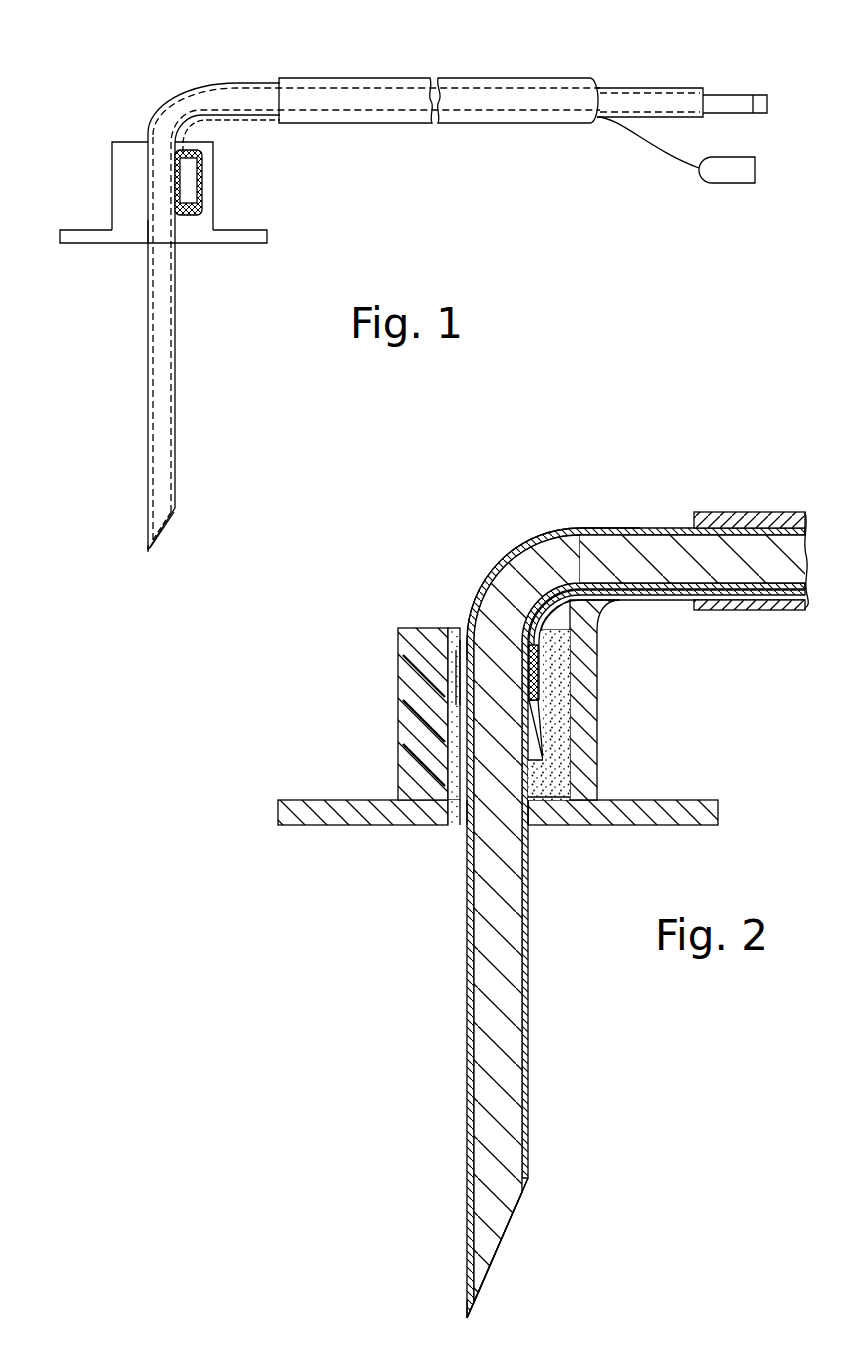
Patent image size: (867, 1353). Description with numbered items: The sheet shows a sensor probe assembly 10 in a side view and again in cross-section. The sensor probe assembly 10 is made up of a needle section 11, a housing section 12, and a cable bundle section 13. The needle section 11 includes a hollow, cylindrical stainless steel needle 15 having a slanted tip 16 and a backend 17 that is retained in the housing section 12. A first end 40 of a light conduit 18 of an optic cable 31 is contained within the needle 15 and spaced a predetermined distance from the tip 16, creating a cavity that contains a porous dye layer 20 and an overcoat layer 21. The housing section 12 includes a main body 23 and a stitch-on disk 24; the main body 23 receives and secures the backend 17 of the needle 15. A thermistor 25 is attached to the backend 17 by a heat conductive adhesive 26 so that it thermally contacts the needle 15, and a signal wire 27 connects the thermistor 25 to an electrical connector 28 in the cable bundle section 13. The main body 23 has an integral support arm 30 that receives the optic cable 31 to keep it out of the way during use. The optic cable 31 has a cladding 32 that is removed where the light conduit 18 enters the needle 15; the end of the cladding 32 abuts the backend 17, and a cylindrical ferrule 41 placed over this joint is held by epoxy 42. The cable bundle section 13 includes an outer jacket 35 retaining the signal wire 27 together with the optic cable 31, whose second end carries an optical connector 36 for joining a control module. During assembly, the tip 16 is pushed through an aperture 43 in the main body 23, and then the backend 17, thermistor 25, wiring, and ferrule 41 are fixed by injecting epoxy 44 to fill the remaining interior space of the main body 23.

In FIG. 1, the sensor probe assembly 10 is at (100, 99).
In FIG. 1, the needle section 11 is at (98, 368).
In FIG. 1, the housing section 12 is at (78, 185).
In FIG. 1, the cable bundle section 13 is at (613, 52).
In FIG. 1, the needle 15 is at (175, 300).
In FIG. 2, the needle 15 is at (527, 990).
In FIG. 1, the tip 16 is at (148, 550).
In FIG. 2, the tip 16 is at (465, 1292).
In FIG. 1, the backend 17 is at (147, 212).
In FIG. 2, the backend 17 is at (470, 775).
In FIG. 1, the light conduit 18 is at (163, 363).
In FIG. 2, the light conduit 18 is at (495, 948).
In FIG. 1, the porous dye layer 20 is at (165, 498).
In FIG. 2, the porous dye layer 20 is at (513, 1213).
In FIG. 1, the overcoat layer 21 is at (163, 527).
In FIG. 2, the overcoat layer 21 is at (498, 1255).
In FIG. 1, the main body 23 is at (215, 208).
In FIG. 2, the main body 23 is at (398, 753).
In FIG. 1, the stitch-on disk 24 is at (268, 242).
In FIG. 2, the stitch-on disk 24 is at (332, 827).
In FIG. 1, the thermistor 25 is at (188, 187).
In FIG. 2, the thermistor 25 is at (553, 740).
In FIG. 1, the heat conductive adhesive 26 is at (203, 168).
In FIG. 2, the heat conductive adhesive 26 is at (538, 788).
In FIG. 1, the signal wire 27 is at (208, 127).
In FIG. 2, the signal wire 27 is at (572, 630).
In FIG. 1, the electrical connector 28 is at (755, 170).
In FIG. 1, the support arm 30 is at (258, 80).
In FIG. 2, the support arm 30 is at (680, 603).
In FIG. 1, the optic cable 31 is at (172, 95).
In FIG. 2, the optic cable 31 is at (633, 518).
In FIG. 1, the cladding 32 is at (192, 95).
In FIG. 2, the cladding 32 is at (553, 530).
In FIG. 1, the outer jacket 35 is at (483, 77).
In FIG. 2, the outer jacket 35 is at (777, 610).
In FIG. 1, the optical connector 36 is at (767, 100).
In FIG. 2, the first end 40 is at (498, 1102).
In FIG. 2, the ferrule 41 is at (468, 673).
In FIG. 2, the epoxy 42 is at (445, 650).
In FIG. 2, the aperture 43 is at (455, 812).
In FIG. 2, the epoxy 44 is at (458, 640).